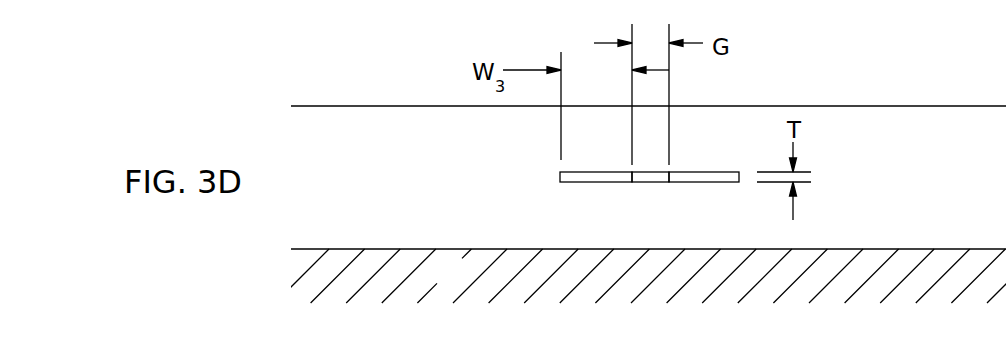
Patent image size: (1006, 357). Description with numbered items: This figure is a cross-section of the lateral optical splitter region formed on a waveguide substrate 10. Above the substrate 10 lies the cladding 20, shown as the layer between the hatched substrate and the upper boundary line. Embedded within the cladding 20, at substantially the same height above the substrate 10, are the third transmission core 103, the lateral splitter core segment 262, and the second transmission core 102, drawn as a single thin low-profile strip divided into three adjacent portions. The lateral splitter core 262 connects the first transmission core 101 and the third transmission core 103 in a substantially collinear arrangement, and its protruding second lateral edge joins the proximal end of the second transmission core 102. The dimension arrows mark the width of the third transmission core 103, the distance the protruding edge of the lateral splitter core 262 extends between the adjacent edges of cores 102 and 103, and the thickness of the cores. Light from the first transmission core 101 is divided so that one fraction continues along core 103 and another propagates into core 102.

The first transmission core 101 is at (268, 9).
The cladding 20 is at (377, 194).
The waveguide substrate 10 is at (463, 289).
The third transmission core 103 is at (595, 182).
The lateral splitter core segment 262 is at (645, 182).
The second transmission core 102 is at (700, 182).